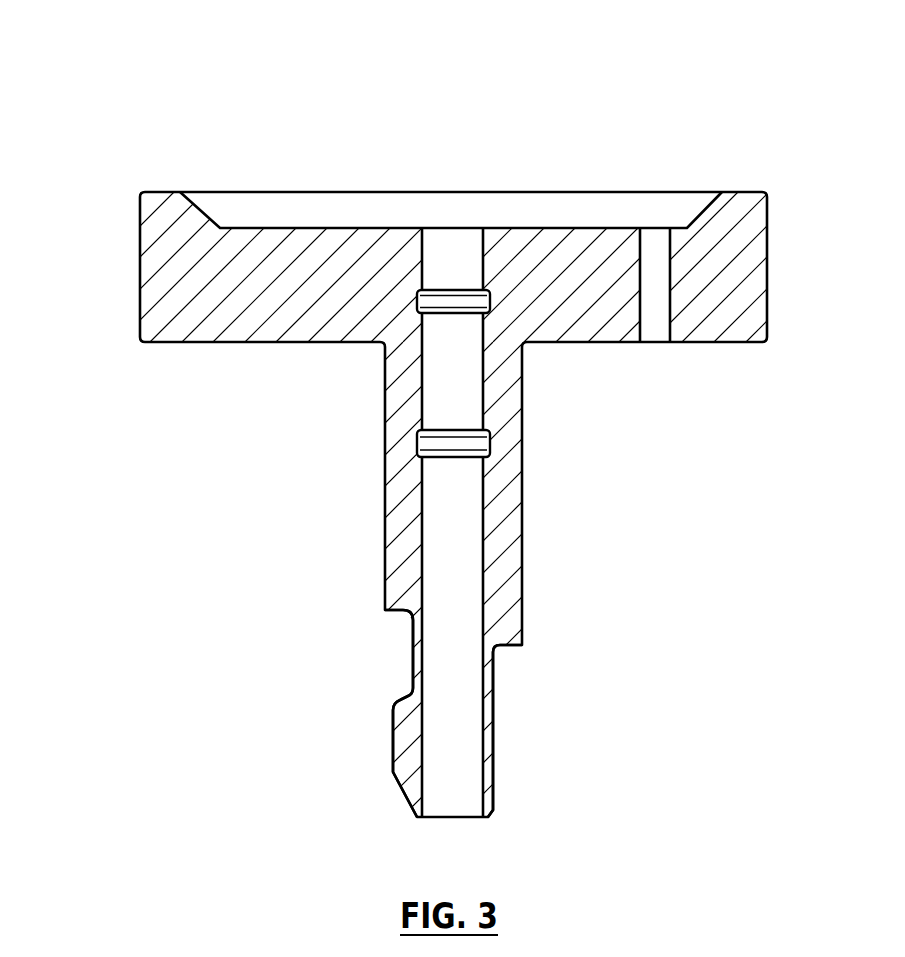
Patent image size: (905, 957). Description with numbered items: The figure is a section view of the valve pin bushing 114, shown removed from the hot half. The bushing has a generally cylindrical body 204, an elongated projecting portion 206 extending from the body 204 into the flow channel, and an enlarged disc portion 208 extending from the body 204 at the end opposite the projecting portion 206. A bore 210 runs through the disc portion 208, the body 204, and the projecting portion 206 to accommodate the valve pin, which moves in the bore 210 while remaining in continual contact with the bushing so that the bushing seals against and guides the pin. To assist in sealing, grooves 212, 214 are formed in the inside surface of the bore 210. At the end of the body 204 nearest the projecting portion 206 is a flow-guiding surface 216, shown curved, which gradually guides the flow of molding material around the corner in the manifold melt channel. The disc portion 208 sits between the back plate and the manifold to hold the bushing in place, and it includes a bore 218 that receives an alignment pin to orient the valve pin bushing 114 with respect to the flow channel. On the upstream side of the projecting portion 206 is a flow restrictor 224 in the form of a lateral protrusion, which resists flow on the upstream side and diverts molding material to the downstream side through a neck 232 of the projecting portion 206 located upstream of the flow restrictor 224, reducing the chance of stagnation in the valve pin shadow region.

The valve pin bushing 114 is at (762, 142).
The body 204 is at (398, 473).
The elongated projecting portion 206 is at (512, 733).
The enlarged disc portion 208 is at (143, 298).
The bore 210 is at (480, 528).
The groove 212 is at (490, 314).
The groove 214 is at (490, 445).
The flow-guiding surface 216 is at (505, 647).
The bore 218 is at (662, 342).
The flow restrictor 224 is at (400, 758).
The neck 232 is at (413, 652).